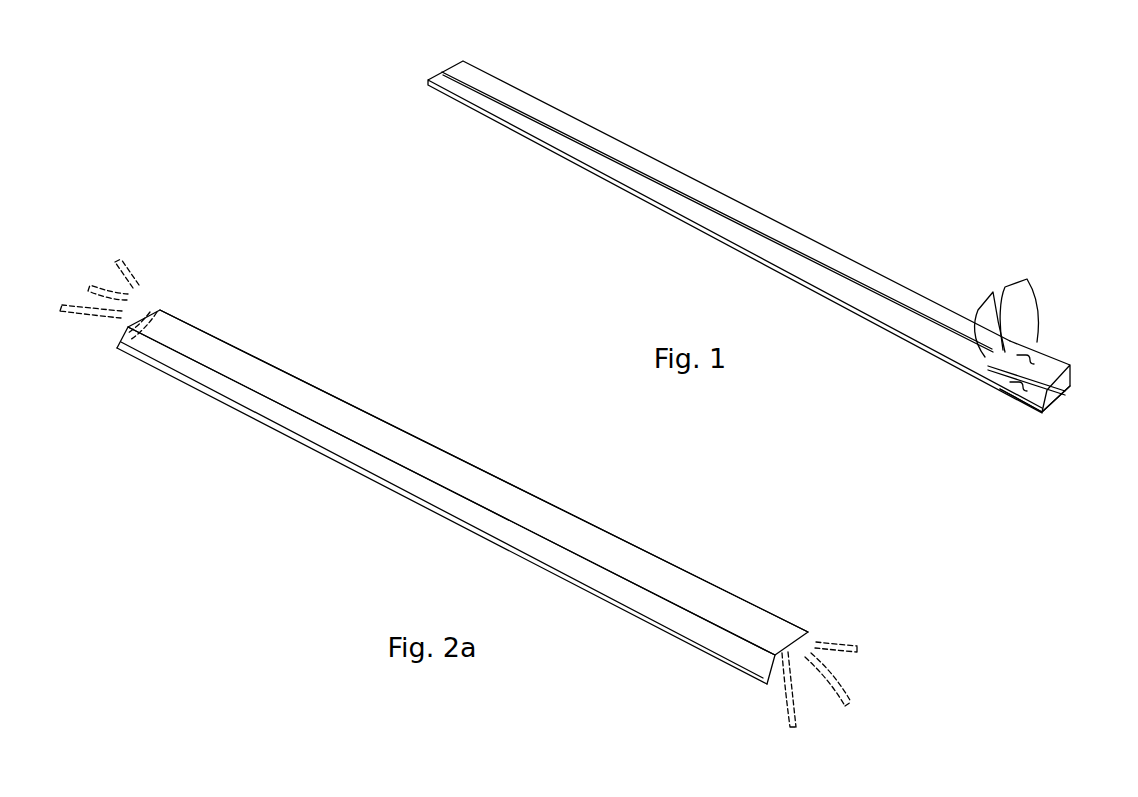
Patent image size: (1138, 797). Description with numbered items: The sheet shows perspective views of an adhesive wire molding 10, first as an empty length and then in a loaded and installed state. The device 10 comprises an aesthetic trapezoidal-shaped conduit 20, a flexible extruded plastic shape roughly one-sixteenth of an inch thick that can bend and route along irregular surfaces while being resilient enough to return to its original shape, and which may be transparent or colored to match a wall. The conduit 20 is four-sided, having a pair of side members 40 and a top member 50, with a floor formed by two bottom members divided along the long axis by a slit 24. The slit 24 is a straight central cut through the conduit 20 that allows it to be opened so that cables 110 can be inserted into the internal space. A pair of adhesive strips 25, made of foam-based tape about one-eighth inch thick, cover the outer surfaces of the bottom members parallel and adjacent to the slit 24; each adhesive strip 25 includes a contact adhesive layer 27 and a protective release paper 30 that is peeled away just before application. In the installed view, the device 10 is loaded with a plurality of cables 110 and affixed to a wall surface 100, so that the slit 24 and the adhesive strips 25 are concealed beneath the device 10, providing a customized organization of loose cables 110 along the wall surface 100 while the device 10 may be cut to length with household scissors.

In FIG. 1, the adhesive wire molding 10 is at (907, 98).
In FIG. 2A, the adhesive wire molding 10 is at (396, 322).
In FIG. 1, the conduit 20 is at (1029, 434).
In FIG. 1, the slit 24 is at (1060, 392).
In FIG. 1, the adhesive strip 25 is at (518, 128).
In FIG. 2A, the adhesive strip 25 is at (248, 413).
In FIG. 1, the contact adhesive layer 27 is at (1010, 388).
In FIG. 1, the release paper 30 is at (760, 242).
In FIG. 1, the side member 40 is at (1068, 378).
In FIG. 2A, the side member 40 is at (388, 468).
In FIG. 1, the top member 50 is at (1053, 417).
In FIG. 2A, the top member 50 is at (677, 585).
In FIG. 2A, the wall surface 100 is at (420, 540).
In FIG. 2A, the cables 110 is at (125, 295).